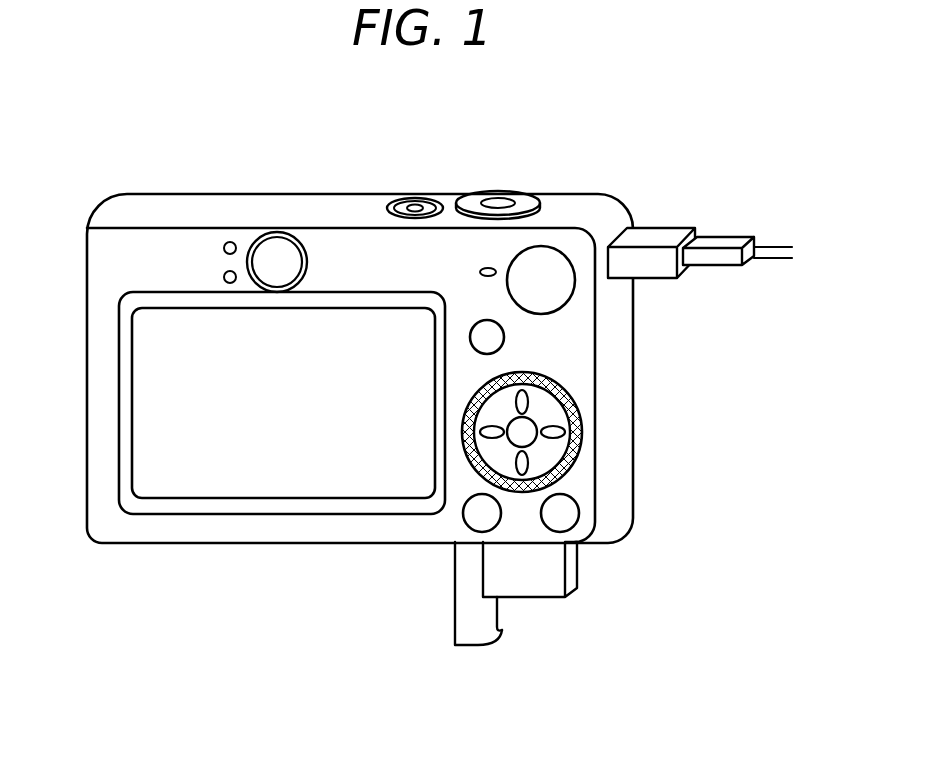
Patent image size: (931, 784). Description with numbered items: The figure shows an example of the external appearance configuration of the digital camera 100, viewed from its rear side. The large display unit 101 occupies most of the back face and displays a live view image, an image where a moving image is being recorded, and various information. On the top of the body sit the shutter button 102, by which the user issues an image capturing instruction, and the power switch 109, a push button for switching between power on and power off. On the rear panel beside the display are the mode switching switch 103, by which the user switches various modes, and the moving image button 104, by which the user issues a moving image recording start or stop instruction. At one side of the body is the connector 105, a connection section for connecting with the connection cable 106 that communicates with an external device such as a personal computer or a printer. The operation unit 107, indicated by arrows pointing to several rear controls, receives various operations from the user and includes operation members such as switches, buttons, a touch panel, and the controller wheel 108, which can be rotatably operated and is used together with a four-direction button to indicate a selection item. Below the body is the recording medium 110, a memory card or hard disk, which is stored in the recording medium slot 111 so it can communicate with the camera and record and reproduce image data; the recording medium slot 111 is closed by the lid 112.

The digital camera 100 is at (202, 563).
The display unit 101 is at (202, 332).
The shutter button 102 is at (498, 203).
The mode switching switch 103 is at (567, 307).
The moving image button 104 is at (480, 320).
The connector 105 is at (650, 229).
The connection cable 106 is at (713, 237).
The operation unit 107 is at (505, 513).
The controller wheel 108 is at (463, 433).
The power switch 109 is at (412, 197).
The recording medium 110 is at (573, 566).
The recording medium slot 111 is at (510, 542).
The lid 112 is at (487, 632).